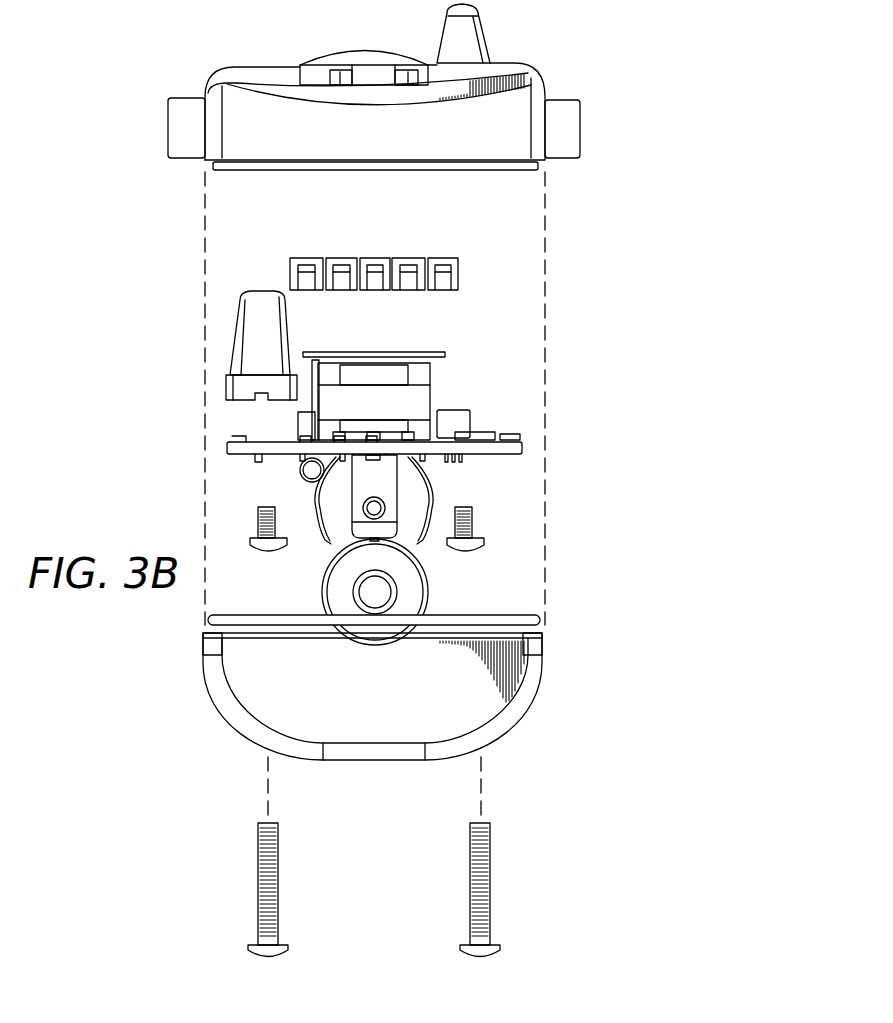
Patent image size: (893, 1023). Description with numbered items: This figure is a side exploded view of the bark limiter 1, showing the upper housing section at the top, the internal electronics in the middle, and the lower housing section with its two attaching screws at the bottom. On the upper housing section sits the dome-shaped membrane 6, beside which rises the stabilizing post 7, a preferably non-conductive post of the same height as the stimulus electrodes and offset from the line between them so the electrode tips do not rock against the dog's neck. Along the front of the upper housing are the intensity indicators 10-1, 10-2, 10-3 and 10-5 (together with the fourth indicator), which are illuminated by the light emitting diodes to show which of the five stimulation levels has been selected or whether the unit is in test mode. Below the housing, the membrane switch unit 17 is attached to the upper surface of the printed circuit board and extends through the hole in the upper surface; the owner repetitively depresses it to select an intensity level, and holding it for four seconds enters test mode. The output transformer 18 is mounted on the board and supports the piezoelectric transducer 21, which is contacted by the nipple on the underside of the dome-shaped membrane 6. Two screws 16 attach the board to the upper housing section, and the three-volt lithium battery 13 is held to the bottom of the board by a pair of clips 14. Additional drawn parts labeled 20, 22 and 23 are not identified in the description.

The bark limiter 1 is at (99, 55).
The dome-shaped membrane 6 is at (375, 52).
The stabilizing post 7 is at (487, 42).
The intensity indicator 10-1 is at (298, 147).
The intensity indicator 10-2 is at (341, 152).
The intensity indicator 10-3 is at (374, 152).
The intensity indicator 10-5 is at (442, 152).
The lithium battery 13 is at (322, 592).
The clips 14 is at (317, 505).
The screws 16 is at (471, 528).
The membrane switch unit 17 is at (258, 293).
The output transformer 18 is at (445, 387).
The connector block 20 is at (464, 268).
The piezoelectric transducer 21 is at (447, 350).
The spring clips 22 is at (397, 504).
The base plate 23 is at (503, 614).